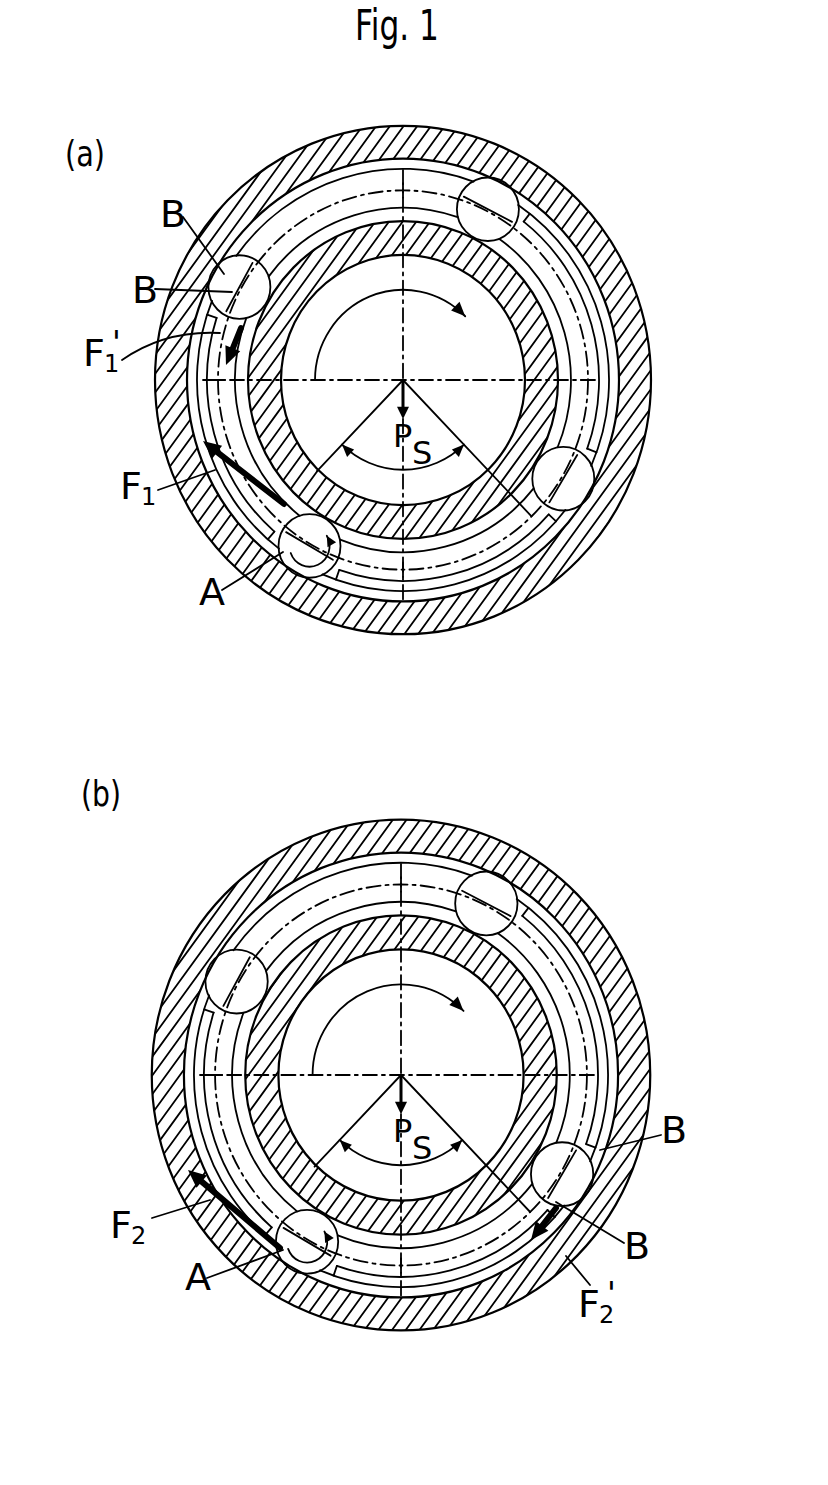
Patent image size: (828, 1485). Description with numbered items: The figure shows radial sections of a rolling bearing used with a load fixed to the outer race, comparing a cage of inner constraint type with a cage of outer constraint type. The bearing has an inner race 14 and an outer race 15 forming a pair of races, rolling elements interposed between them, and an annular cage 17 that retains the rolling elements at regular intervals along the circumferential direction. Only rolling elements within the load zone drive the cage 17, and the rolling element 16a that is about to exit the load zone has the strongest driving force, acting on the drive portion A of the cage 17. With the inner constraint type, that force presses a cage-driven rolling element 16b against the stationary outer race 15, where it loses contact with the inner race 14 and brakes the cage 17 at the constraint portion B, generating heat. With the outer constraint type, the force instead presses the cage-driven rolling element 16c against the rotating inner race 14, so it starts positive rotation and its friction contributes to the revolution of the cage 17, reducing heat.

The inner race 14 is at (522, 420).
The outer race 15 is at (595, 235).
The rolling element about to exit the load zone 16a is at (298, 555).
The rolling element having no cage-driving force 16b is at (226, 282).
The rolling element having no cage-driving force 16c is at (578, 1182).
The cage 17 is at (585, 317).